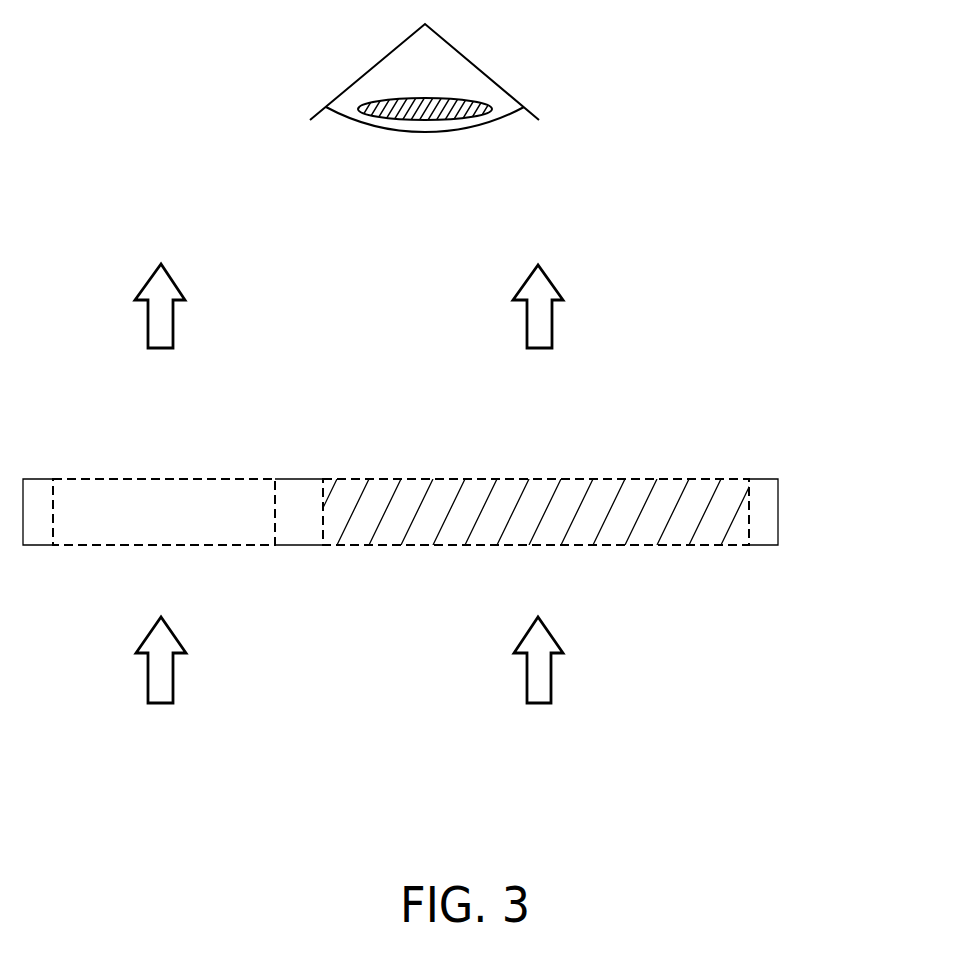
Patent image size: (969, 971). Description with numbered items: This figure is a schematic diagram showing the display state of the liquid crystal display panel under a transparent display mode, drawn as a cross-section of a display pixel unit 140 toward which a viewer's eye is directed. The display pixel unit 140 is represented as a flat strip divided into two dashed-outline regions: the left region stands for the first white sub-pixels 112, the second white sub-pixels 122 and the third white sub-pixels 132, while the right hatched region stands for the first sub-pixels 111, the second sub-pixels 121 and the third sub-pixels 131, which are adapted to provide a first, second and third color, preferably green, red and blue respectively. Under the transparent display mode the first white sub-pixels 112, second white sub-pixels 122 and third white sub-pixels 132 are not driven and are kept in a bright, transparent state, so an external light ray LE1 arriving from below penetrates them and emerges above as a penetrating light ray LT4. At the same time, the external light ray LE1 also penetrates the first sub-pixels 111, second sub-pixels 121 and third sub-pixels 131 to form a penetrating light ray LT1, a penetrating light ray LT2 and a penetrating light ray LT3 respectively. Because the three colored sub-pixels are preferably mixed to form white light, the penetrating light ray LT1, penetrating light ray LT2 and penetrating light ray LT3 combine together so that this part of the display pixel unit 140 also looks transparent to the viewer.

The display pixel unit 140 is at (760, 248).
The first sub-pixel unit 111 is at (545, 467).
The second sub-pixel unit 121 is at (545, 467).
The third sub-pixel unit 131 is at (667, 492).
The first white sub-pixel 112 is at (194, 467).
The second white sub-pixel 122 is at (194, 467).
The third white sub-pixel 132 is at (188, 493).
The penetrating light ray LT1 is at (640, 306).
The penetrating light ray LT2 is at (640, 306).
The penetrating light ray LT3 is at (552, 320).
The penetrating light ray LT4 is at (173, 320).
The external light ray LE1 is at (173, 675).